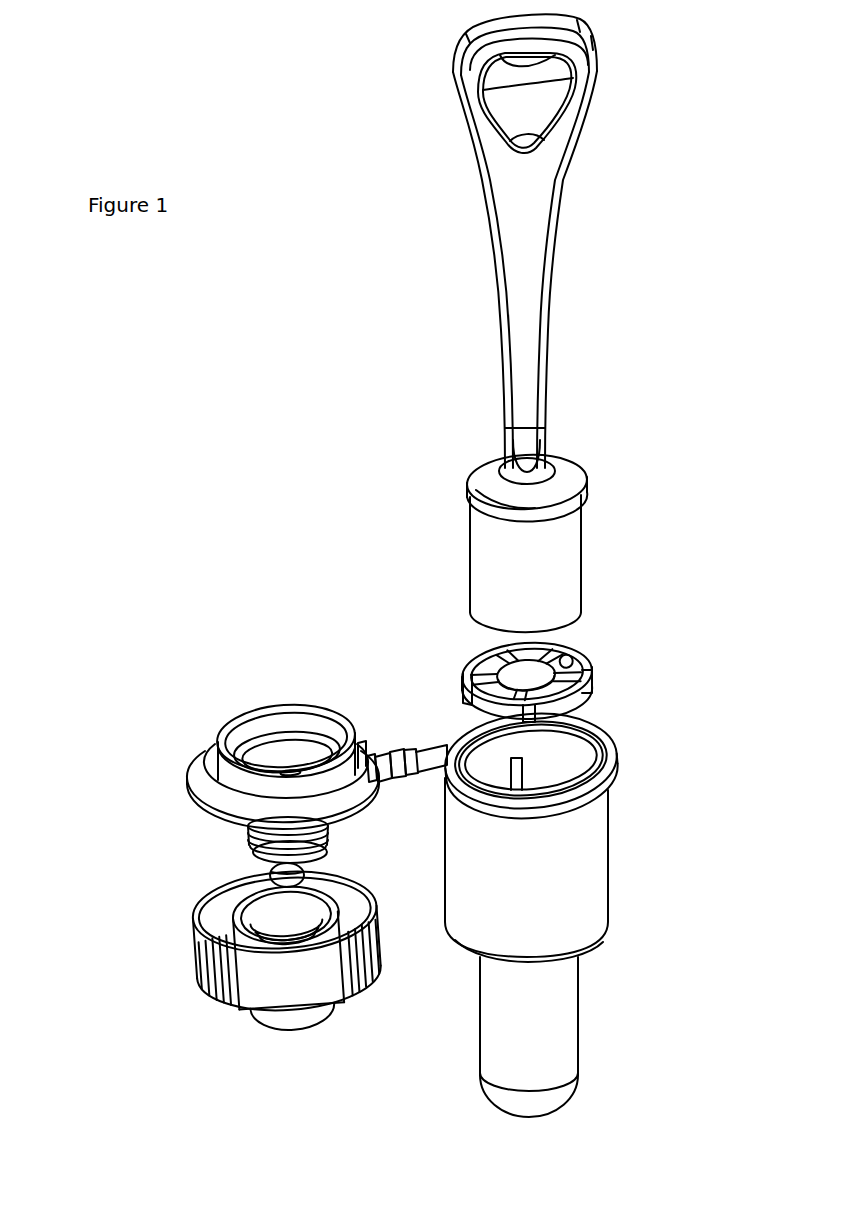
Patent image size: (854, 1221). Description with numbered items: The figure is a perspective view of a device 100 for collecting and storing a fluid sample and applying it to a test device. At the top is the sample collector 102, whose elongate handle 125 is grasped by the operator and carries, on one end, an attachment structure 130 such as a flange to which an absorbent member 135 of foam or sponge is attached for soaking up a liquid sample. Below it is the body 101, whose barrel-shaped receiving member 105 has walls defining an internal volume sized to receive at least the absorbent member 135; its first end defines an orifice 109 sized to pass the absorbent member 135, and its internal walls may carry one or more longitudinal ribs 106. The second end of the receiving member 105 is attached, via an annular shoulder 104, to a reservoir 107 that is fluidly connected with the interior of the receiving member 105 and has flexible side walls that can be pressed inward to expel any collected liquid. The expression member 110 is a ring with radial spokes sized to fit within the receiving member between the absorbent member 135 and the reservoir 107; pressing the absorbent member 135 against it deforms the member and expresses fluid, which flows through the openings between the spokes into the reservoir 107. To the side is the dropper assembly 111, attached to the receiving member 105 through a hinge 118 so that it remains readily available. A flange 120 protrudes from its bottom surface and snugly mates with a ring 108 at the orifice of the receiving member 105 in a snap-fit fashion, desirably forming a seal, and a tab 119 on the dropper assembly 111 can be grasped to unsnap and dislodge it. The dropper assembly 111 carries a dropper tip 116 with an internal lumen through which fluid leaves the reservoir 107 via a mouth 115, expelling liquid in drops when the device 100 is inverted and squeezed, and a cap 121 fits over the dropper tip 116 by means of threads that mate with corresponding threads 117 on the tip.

The device 100 is at (298, 400).
The body 101 is at (697, 643).
The sample collector 102 is at (690, 20).
The annular shoulder 104 is at (592, 907).
The receiving member 105 is at (600, 805).
The longitudinal ribs 106 is at (605, 708).
The reservoir 107 is at (573, 987).
The ring 108 is at (596, 690).
The orifice 109 is at (462, 724).
The expression member 110 is at (578, 629).
The dropper assembly 111 is at (65, 710).
The mouth 115 is at (293, 845).
The dropper tip 116 is at (273, 858).
The threads 117 is at (250, 845).
The hinge 118 is at (405, 750).
The tab 119 is at (202, 745).
The flange 120 is at (283, 680).
The cap 121 is at (223, 916).
The handle 125 is at (538, 128).
The attachment structure 130 is at (560, 447).
The absorbent member 135 is at (565, 525).